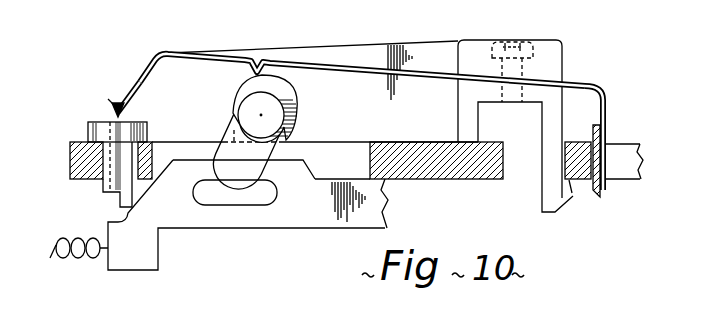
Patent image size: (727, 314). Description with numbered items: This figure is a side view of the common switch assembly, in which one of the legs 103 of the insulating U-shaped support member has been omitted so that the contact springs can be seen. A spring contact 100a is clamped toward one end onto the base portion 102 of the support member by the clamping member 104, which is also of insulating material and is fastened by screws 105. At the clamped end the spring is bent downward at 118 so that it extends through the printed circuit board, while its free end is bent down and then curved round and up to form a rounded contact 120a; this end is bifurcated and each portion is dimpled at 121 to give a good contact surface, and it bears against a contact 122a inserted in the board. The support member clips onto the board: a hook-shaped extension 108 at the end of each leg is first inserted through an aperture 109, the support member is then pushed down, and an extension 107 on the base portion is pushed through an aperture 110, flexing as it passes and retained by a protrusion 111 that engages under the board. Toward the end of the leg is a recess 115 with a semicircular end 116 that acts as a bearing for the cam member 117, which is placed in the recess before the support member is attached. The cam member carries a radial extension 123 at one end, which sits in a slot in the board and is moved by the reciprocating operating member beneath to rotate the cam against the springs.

The spring contact 100a is at (185, 48).
The base portion 102 is at (565, 107).
The leg 103 is at (427, 53).
The clamping member 104 is at (556, 68).
The screw 105 is at (538, 42).
The extension 107 is at (542, 192).
The extension 108 is at (122, 197).
The aperture 109 is at (136, 177).
The aperture 110 is at (518, 166).
The protrusion 111 is at (570, 193).
The recess 115 is at (234, 130).
The semicircular end 116 is at (277, 118).
The cam member 117 is at (296, 100).
The bent-down portion of contact spring 118 is at (605, 128).
The rounded contact 120a is at (114, 100).
The dimple 121 is at (112, 116).
The contact 122a is at (146, 128).
The radial extension 123 is at (240, 173).